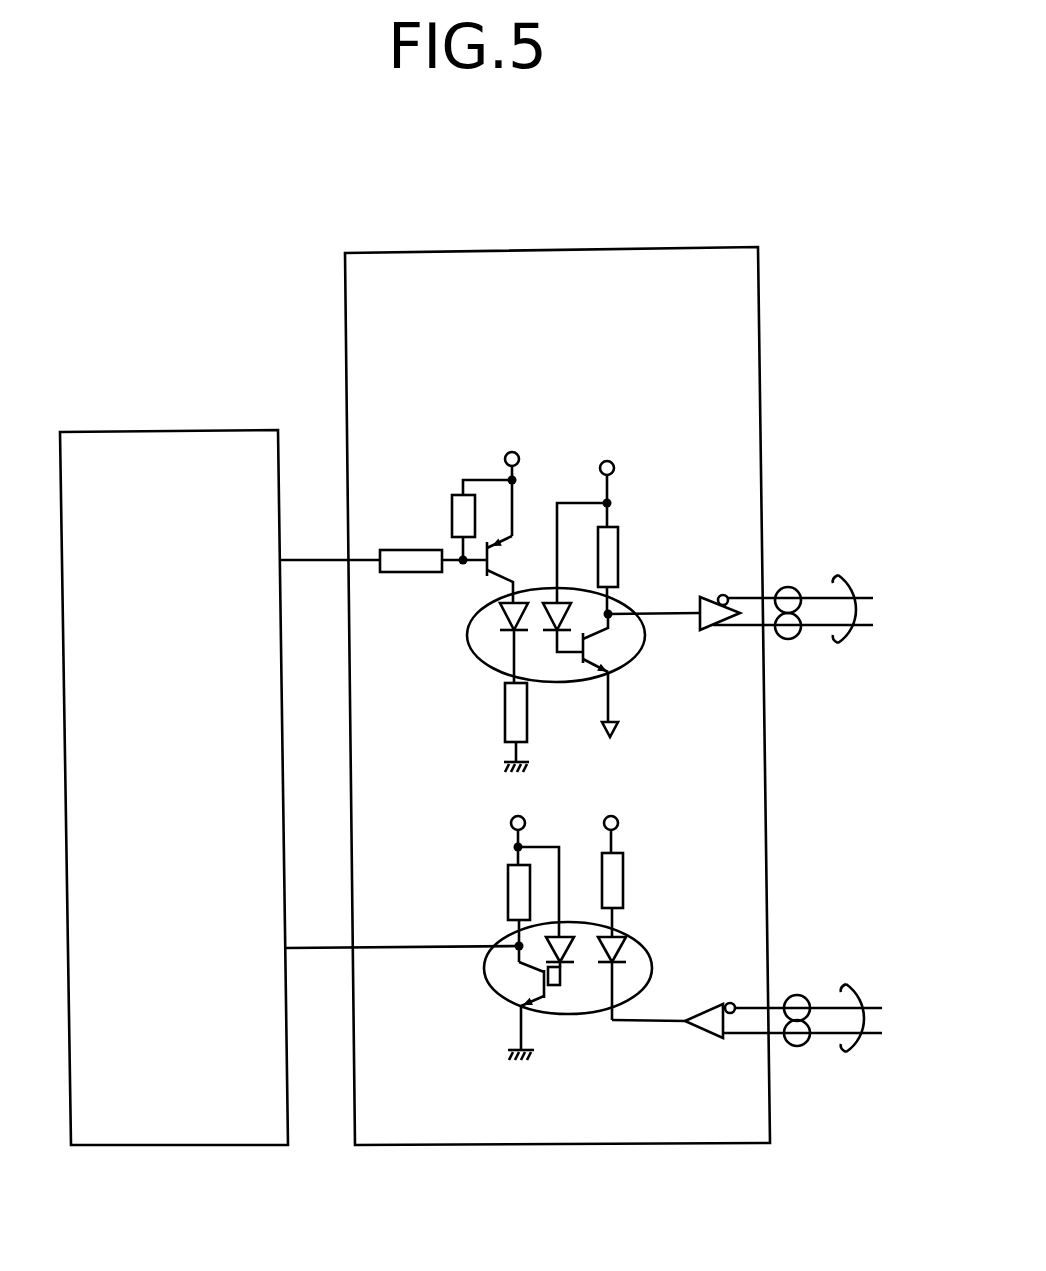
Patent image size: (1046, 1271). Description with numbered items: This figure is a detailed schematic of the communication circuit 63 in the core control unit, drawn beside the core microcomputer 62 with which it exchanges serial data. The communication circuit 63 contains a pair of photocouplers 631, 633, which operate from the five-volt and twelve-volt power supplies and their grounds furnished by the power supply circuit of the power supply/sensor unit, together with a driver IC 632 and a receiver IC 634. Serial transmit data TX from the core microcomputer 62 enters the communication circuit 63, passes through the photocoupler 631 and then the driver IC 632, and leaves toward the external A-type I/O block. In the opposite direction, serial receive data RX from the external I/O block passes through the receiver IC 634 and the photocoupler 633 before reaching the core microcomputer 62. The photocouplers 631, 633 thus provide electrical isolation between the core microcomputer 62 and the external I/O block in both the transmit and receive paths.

The core microcomputer 62 is at (177, 1145).
The communication circuit 63 is at (557, 1143).
The photocoupler 631 is at (470, 648).
The driver IC 632 is at (702, 597).
The photocoupler 633 is at (490, 987).
The receiver IC 634 is at (707, 1038).